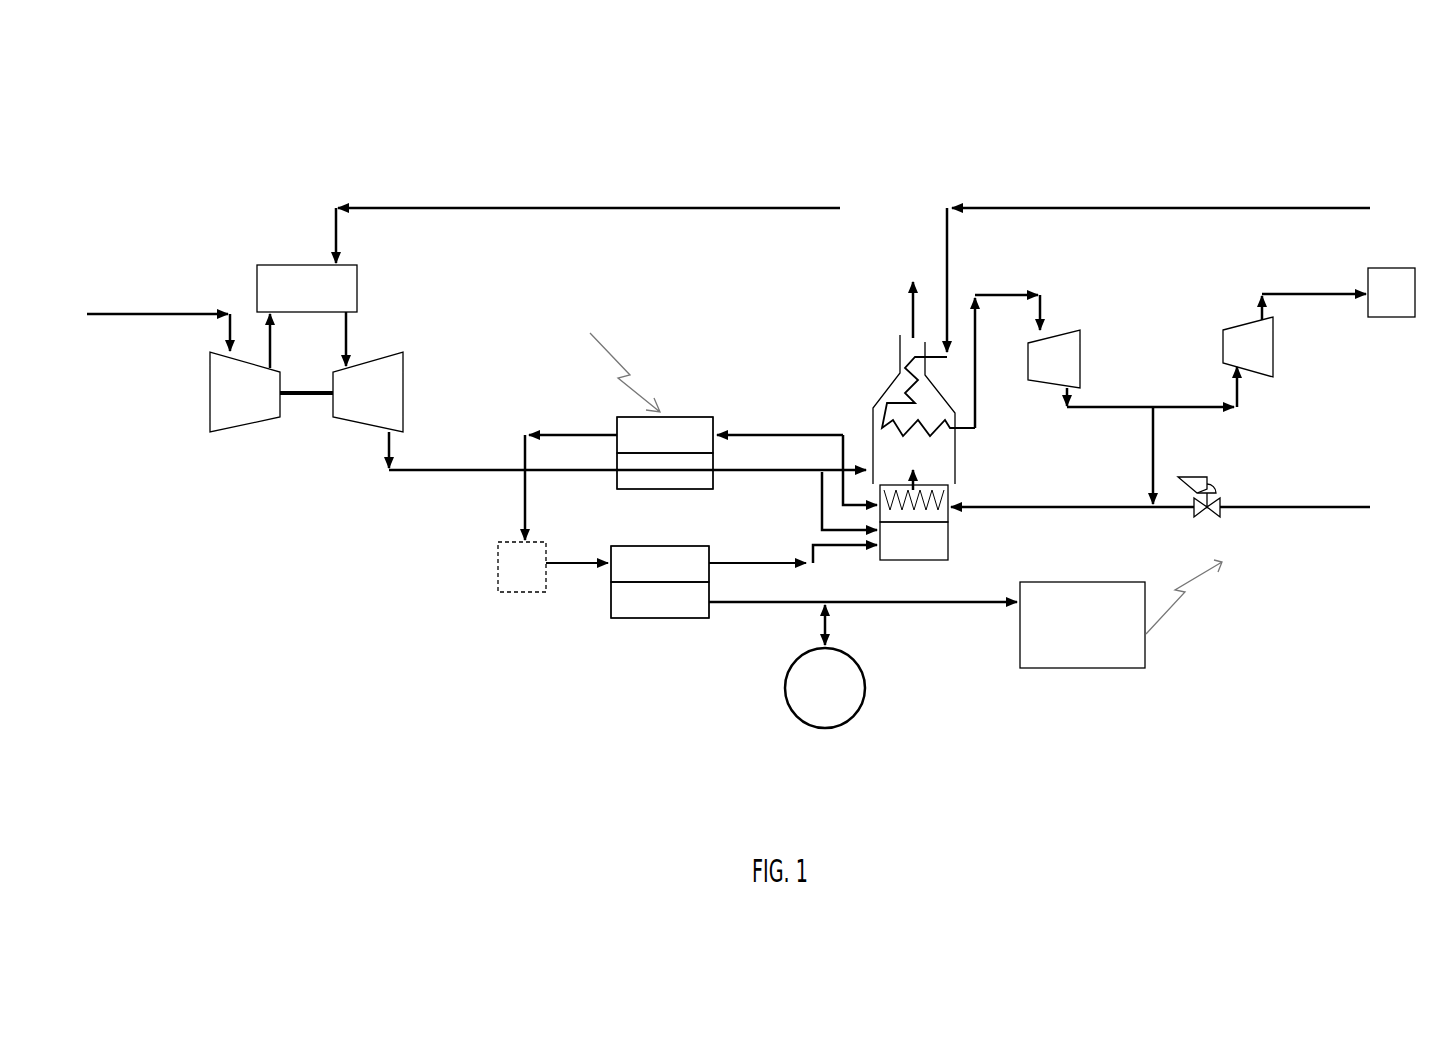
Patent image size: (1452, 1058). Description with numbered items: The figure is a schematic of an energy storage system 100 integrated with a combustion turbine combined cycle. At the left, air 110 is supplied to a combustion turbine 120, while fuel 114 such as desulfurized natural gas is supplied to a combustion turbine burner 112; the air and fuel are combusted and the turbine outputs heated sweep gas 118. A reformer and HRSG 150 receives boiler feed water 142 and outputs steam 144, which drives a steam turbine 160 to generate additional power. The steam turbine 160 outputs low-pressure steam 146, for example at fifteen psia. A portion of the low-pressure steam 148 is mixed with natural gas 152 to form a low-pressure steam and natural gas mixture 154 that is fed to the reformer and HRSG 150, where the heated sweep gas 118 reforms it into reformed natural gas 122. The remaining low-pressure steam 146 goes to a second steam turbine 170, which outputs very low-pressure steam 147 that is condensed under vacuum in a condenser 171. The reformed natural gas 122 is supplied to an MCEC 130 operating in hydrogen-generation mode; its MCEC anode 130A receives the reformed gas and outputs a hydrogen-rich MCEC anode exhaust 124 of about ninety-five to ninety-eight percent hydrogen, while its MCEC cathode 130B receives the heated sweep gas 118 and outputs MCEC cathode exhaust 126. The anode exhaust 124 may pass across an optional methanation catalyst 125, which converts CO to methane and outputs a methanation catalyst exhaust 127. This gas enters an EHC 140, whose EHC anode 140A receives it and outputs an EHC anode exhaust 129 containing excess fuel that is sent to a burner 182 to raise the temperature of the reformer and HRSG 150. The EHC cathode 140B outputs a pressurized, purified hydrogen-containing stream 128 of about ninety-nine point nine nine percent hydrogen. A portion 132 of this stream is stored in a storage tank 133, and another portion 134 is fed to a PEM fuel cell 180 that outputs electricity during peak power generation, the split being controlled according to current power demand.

The energy storage system 100 is at (241, 100).
The air 110 is at (134, 311).
The combustion turbine burner 112 is at (288, 262).
The fuel 114 is at (466, 203).
The heated sweep gas 118 is at (474, 467).
The combustion turbine 120 is at (296, 456).
The reformed natural gas 122 is at (798, 432).
The MCEC anode exhaust 124 is at (520, 524).
The methanation catalyst 125 is at (496, 566).
The MCEC cathode exhaust 126 is at (766, 472).
The methanation catalyst exhaust 127 is at (570, 566).
The pressurized, purified hydrogen-containing stream 128 is at (762, 604).
The EHC anode exhaust 129 is at (790, 566).
The MCEC 130 is at (708, 414).
The MCEC anode 130A is at (637, 420).
The MCEC cathode 130B is at (667, 474).
The portion of the hydrogen-containing stream 132 is at (828, 627).
The storage tank 133 is at (866, 688).
The portion of the hydrogen-containing stream 134 is at (959, 605).
The EHC 140 is at (697, 618).
The EHC anode 140A is at (622, 552).
The EHC cathode 140B is at (622, 600).
The boiler feed water 142 is at (1080, 205).
The steam 144 is at (1016, 291).
The low-pressure steam 146 is at (1132, 404).
The very low-pressure steam 147 is at (1334, 296).
The portion of the low-pressure steam 148 is at (1148, 465).
The reformer and HRSG 150 is at (883, 394).
The natural gas 152 is at (1349, 509).
The low-pressure steam and natural gas mixture 154 is at (1042, 504).
The steam turbine 160 is at (1082, 345).
The second steam turbine 170 is at (1230, 323).
The condenser 171 is at (1374, 266).
The PEM fuel cell 180 is at (1075, 580).
The burner 182 is at (950, 545).